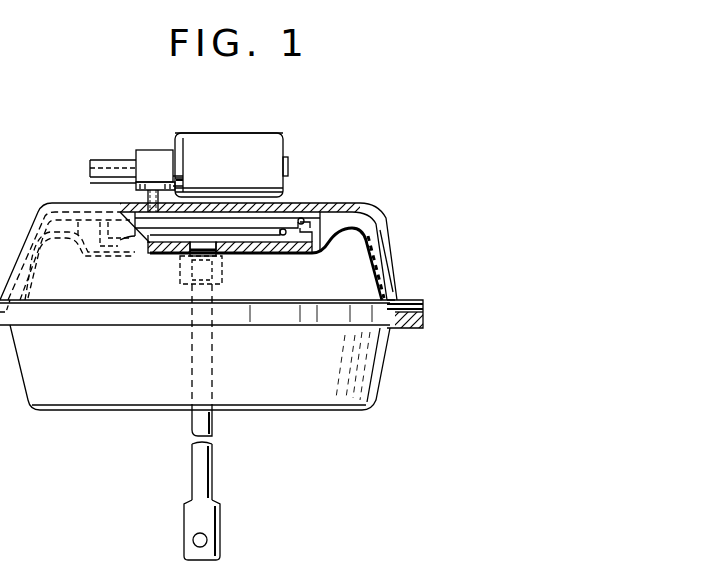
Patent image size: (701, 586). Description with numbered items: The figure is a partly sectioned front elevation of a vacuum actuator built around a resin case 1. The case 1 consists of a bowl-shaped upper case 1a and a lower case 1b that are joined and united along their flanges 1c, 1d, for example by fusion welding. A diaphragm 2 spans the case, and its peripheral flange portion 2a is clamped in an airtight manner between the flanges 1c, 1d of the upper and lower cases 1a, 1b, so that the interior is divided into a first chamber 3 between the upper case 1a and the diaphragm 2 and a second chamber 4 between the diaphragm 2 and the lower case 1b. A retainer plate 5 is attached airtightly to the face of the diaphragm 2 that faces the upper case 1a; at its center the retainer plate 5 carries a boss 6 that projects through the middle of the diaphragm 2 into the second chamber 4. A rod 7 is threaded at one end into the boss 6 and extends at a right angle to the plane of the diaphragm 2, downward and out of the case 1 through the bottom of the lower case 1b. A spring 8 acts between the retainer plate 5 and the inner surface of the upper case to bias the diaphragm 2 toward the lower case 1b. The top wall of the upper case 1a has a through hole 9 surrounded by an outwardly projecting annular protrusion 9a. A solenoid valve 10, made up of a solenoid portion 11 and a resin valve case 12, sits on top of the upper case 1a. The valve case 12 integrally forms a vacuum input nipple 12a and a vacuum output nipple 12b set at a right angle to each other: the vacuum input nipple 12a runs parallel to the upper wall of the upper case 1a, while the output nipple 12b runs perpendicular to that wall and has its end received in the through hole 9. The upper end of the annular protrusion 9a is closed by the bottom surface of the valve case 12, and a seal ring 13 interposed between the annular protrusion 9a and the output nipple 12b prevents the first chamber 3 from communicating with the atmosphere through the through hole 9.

The case 1 is at (376, 203).
The upper case 1a is at (384, 240).
The lower case 1b is at (383, 382).
The flange 1c is at (408, 300).
The flange 1d is at (408, 328).
The diaphragm 2 is at (345, 236).
The peripheral flange portion 2a is at (423, 306).
The first chamber 3 is at (341, 222).
The second chamber 4 is at (370, 307).
The retainer plate 5 is at (304, 255).
The boss 6 is at (212, 257).
The rod 7 is at (222, 430).
The spring 8 is at (302, 216).
The through hole 9 is at (136, 244).
The annular protrusion 9a is at (94, 183).
The solenoid valve 10 is at (272, 114).
The solenoid portion 11 is at (318, 134).
The valve case 12 is at (141, 151).
The vacuum input nipple 12a is at (108, 161).
The vacuum output nipple 12b is at (156, 188).
The seal ring 13 is at (188, 188).